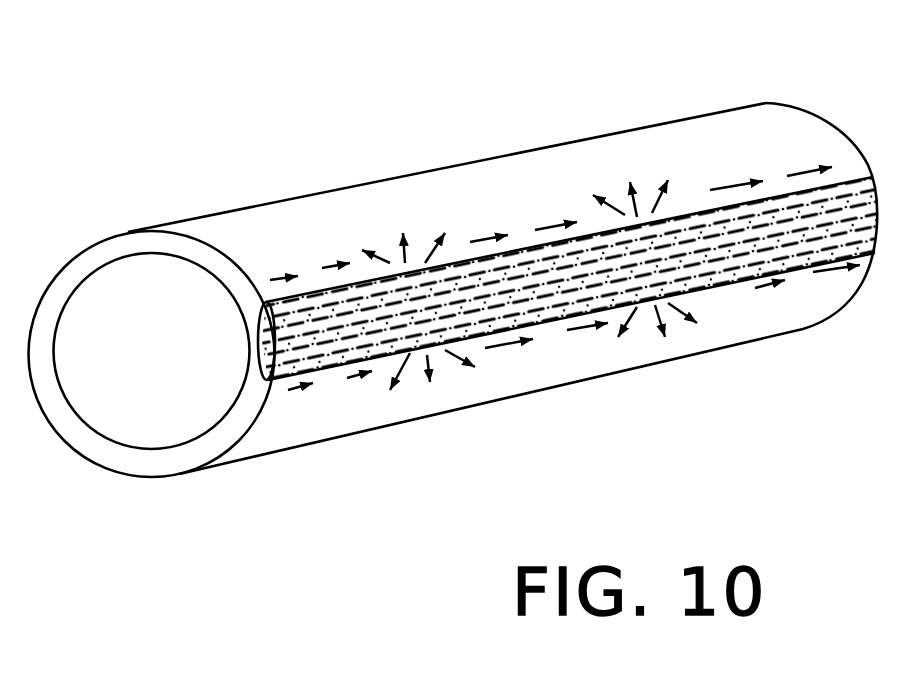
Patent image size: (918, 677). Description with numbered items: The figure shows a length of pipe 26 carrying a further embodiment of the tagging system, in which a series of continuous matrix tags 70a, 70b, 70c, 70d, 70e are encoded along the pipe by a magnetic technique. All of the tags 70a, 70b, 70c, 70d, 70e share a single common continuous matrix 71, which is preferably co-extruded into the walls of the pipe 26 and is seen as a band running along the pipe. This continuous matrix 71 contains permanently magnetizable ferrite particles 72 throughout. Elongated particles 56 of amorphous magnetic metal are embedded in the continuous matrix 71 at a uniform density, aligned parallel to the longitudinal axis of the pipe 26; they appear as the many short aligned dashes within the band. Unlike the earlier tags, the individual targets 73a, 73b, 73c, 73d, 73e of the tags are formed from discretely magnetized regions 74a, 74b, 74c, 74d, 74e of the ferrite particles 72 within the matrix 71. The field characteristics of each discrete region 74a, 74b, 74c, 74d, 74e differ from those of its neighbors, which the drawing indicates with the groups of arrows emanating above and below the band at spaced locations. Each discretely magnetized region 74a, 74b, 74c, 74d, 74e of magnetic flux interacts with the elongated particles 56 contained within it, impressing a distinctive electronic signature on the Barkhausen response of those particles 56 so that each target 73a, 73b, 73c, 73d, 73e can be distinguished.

The pipe 26 is at (558, 378).
The elongated particles of amorphous magnetic metal 56 is at (360, 315).
The continuous matrix 71 is at (260, 345).
The ferrite particles 72 is at (280, 313).
The continuous matrix tag 70a is at (313, 290).
The continuous matrix tag 70b is at (417, 267).
The continuous matrix tag 70c is at (520, 243).
The continuous matrix tag 70d is at (628, 223).
The continuous matrix tag 70e is at (773, 190).
The target 73a is at (277, 350).
The target 73b is at (417, 313).
The target 73c is at (560, 277).
The target 73d is at (645, 260).
The target 73e is at (800, 218).
The discretely magnetized region 74a is at (348, 378).
The discretely magnetized region 74b is at (437, 360).
The discretely magnetized region 74c is at (570, 331).
The discretely magnetized region 74d is at (655, 313).
The discretely magnetized region 74e is at (750, 290).